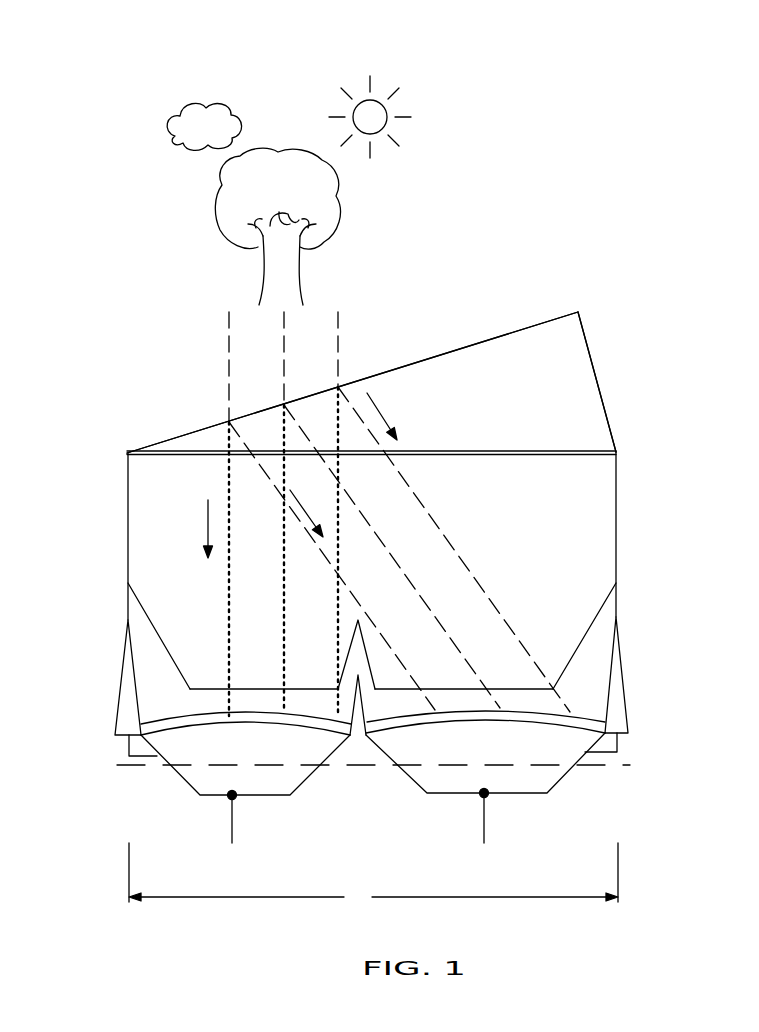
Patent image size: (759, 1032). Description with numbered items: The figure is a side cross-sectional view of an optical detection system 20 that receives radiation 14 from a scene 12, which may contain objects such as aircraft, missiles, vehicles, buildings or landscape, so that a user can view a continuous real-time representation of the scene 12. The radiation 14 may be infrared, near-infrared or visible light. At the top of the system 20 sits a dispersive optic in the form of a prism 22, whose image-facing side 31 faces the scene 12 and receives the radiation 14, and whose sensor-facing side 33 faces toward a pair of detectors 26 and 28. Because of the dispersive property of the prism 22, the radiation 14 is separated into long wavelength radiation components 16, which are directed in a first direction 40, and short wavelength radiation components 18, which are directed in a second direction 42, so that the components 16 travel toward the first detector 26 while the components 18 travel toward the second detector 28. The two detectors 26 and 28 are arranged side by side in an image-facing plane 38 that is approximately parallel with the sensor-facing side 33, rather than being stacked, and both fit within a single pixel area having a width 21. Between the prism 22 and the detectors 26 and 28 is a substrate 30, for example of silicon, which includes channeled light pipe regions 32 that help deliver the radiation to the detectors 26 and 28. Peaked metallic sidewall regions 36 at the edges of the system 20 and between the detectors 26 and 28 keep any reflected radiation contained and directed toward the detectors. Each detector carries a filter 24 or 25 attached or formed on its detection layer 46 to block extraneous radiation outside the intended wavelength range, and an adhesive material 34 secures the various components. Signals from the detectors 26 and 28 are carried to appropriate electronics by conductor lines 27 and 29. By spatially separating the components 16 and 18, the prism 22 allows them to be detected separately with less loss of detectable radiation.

The scene 12 is at (392, 197).
The radiation 14 is at (227, 330).
The long wavelength radiation components 16 is at (229, 479).
The short wavelength radiation components 18 is at (378, 625).
The optical detection system 20 is at (608, 332).
The width 21 is at (373, 876).
The prism 22 is at (530, 327).
The filter 24 is at (217, 716).
The filter 25 is at (503, 718).
The detector 26 is at (310, 774).
The conductor line 27 is at (232, 825).
The detector 28 is at (570, 770).
The conductor line 29 is at (484, 825).
The substrate 30 is at (190, 543).
The image-facing side 31 is at (462, 346).
The light pipe regions 32 is at (158, 606).
The sensor-facing side 33 is at (505, 490).
The adhesive material 34 is at (129, 748).
The sidewall regions 36 is at (122, 708).
The image-facing plane 38 is at (609, 766).
The first direction 40 is at (205, 507).
The second direction 42 is at (300, 504).
The detection layer 46 is at (237, 723).